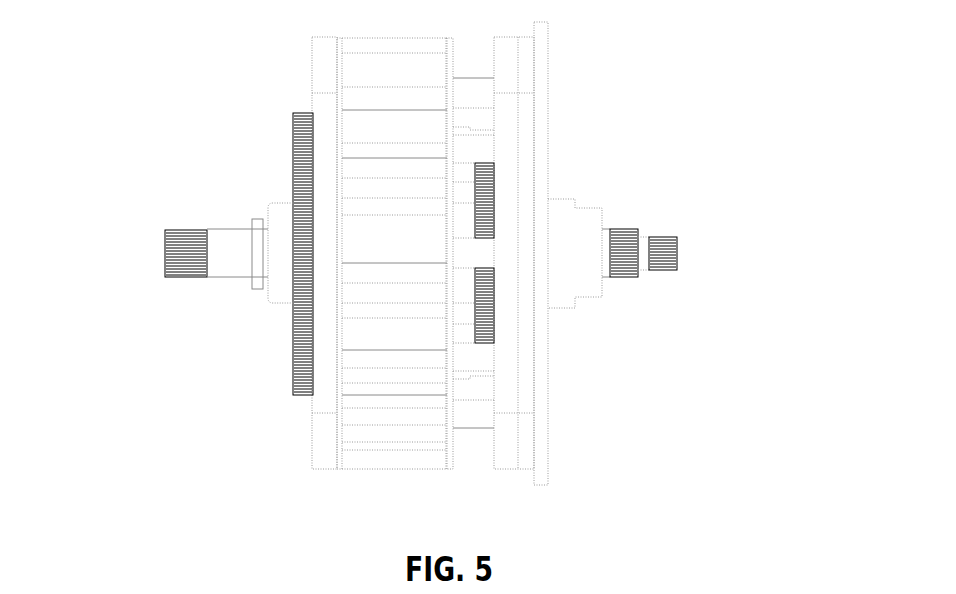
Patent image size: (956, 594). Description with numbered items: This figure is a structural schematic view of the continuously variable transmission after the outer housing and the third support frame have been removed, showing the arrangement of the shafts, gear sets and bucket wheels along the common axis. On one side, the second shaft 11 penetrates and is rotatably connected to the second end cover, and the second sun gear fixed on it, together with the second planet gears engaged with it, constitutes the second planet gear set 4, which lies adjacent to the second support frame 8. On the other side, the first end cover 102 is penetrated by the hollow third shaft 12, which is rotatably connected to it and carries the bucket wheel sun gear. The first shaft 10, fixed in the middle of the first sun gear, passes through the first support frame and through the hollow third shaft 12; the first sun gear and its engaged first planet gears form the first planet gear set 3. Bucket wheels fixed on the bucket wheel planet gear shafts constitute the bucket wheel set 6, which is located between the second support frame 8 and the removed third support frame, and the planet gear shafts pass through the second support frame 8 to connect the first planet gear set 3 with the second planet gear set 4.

The second support frame 8 is at (320, 70).
The bucket wheel set 6 is at (377, 470).
The second planet gear set 4 is at (293, 353).
The second shaft 11 is at (223, 254).
The first planet gear set 3 is at (490, 347).
The first end cover 102 is at (575, 200).
The third shaft 12 is at (622, 230).
The first shaft 10 is at (662, 238).